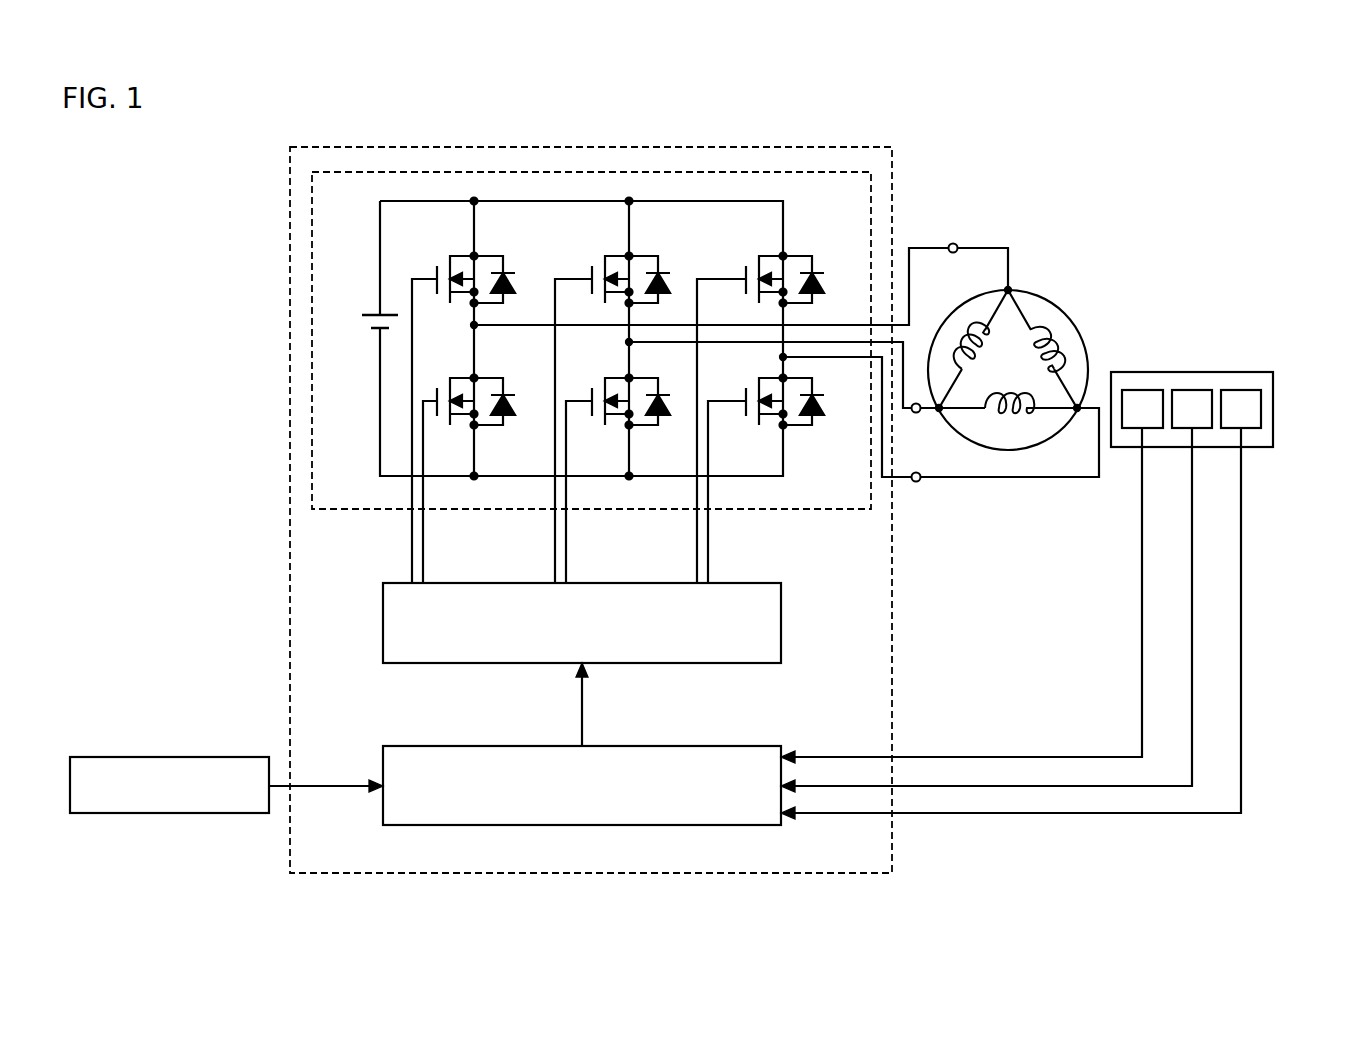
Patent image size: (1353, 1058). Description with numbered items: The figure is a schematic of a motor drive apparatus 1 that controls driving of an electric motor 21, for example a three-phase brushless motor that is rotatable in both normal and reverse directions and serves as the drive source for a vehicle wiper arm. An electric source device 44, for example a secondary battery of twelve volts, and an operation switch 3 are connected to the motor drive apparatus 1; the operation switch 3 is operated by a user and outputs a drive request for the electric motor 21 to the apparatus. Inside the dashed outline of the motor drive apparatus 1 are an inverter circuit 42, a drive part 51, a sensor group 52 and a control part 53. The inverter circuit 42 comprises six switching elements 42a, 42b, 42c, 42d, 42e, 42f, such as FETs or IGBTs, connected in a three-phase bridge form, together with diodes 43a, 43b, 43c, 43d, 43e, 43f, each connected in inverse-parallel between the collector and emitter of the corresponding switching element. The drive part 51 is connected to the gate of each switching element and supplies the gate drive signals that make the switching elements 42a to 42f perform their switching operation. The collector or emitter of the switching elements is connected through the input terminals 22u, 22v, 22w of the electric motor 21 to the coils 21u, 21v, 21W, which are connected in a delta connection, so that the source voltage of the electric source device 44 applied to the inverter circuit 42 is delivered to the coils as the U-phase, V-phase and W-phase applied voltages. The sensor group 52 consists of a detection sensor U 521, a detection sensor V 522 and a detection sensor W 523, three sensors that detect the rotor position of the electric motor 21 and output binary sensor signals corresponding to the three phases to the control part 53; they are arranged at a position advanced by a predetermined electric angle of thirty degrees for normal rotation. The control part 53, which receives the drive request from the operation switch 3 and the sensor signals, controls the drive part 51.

The motor drive apparatus 1 is at (884, 147).
The operation switch 3 is at (241, 757).
The electric motor 21 is at (1030, 362).
The coil 21u is at (958, 340).
The coil 21v is at (1010, 427).
The coil 21W is at (1060, 352).
The input terminal 22u is at (955, 243).
The input terminal 22v is at (916, 413).
The input terminal 22w is at (916, 482).
The inverter circuit 42 is at (835, 172).
The switching element 42a is at (449, 258).
The switching element 42b is at (604, 258).
The switching element 42c is at (758, 258).
The switching element 42d is at (449, 380).
The switching element 42e is at (604, 380).
The switching element 42f is at (759, 380).
The diode 43a is at (505, 273).
The diode 43b is at (660, 273).
The diode 43c is at (814, 273).
The diode 43d is at (505, 395).
The diode 43e is at (660, 395).
The diode 43f is at (815, 415).
The electric source device 44 is at (373, 312).
The drive part 51 is at (756, 583).
The sensor group 52 is at (1052, 567).
The detection sensor U 521 is at (1141, 389).
The detection sensor V 522 is at (1192, 389).
The detection sensor W 523 is at (1242, 389).
The control part 53 is at (756, 746).